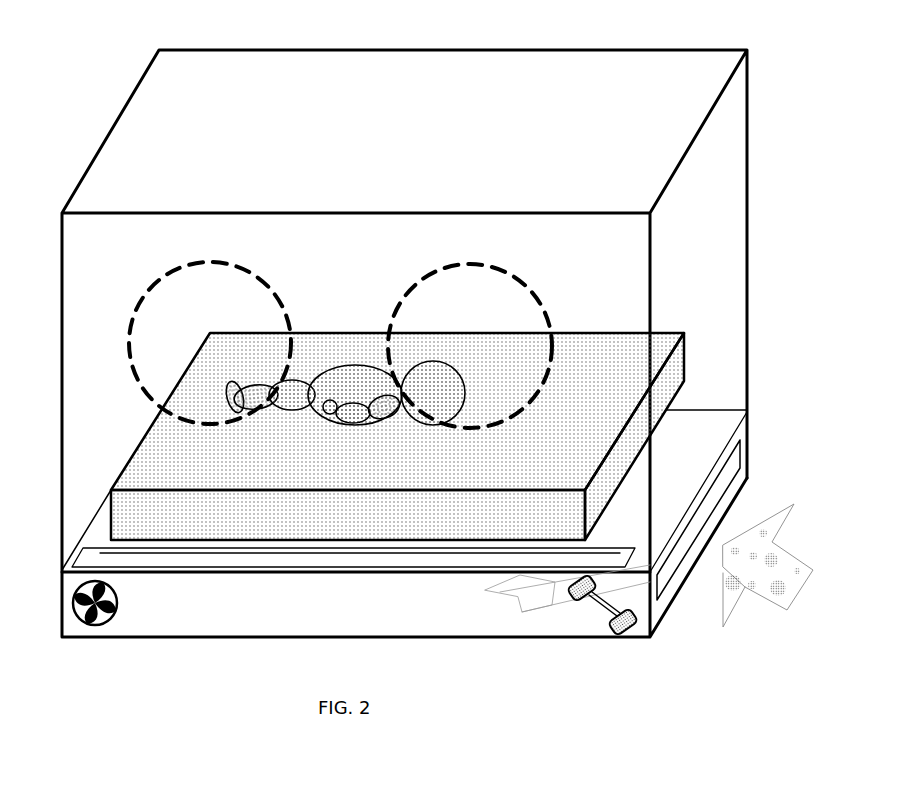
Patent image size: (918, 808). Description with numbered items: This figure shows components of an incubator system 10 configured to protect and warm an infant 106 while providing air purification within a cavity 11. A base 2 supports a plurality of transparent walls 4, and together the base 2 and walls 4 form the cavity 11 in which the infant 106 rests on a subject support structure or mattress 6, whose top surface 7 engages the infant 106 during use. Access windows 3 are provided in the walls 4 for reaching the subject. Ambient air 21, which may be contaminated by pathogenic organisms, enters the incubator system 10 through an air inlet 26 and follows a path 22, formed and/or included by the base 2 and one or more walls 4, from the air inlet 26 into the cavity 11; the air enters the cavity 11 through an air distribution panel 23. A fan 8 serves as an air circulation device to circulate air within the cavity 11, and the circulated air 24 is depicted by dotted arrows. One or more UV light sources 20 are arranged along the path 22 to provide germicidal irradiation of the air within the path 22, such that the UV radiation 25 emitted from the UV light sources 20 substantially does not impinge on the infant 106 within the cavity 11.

The base 2 is at (388, 392).
The access windows 3 is at (340, 337).
The transparent walls 4 is at (631, 225).
The subject support structure 6 is at (373, 451).
The top surface 7 is at (158, 446).
The fan 8 is at (118, 591).
The incubator system 10 is at (112, 664).
The cavity 11 is at (150, 184).
The UV light sources 20 is at (610, 627).
The ambient air 21 is at (731, 613).
The path 22 is at (518, 596).
The air distribution panel 23 is at (330, 559).
The circulated air 24 is at (78, 548).
The UV radiation 25 is at (600, 607).
The air inlet 26 is at (668, 582).
The infant 106 is at (344, 393).